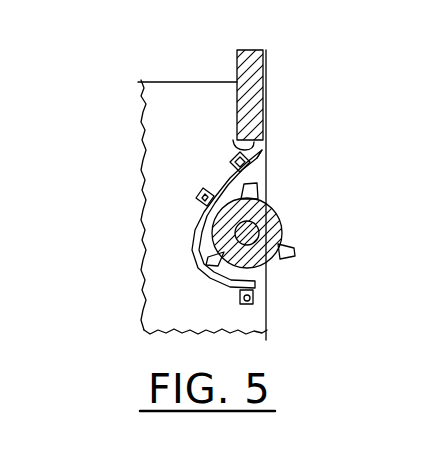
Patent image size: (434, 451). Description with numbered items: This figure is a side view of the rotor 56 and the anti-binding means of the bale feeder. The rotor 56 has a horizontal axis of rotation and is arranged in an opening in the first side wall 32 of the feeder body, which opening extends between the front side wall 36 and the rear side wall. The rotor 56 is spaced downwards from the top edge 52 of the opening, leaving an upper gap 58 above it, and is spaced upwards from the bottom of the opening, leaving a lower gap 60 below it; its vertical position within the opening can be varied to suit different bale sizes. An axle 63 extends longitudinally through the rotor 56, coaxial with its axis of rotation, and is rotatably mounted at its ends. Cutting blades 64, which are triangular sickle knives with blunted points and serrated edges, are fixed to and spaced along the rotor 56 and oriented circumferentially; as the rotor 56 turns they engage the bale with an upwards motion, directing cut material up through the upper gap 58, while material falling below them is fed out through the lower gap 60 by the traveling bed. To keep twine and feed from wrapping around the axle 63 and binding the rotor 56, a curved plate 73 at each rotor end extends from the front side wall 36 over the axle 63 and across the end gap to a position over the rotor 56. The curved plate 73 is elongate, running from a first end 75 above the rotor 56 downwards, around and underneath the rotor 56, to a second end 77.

The first side wall 32 is at (265, 70).
The front side wall 36 is at (165, 124).
The top edge 52 is at (233, 146).
The rotor 56 is at (278, 235).
The upper gap 58 is at (272, 170).
The lower gap 60 is at (299, 341).
The axle 63 is at (257, 226).
The cutting blades 64 is at (238, 170).
The curved plate 73 is at (195, 228).
The first end 75 is at (264, 154).
The second end 77 is at (256, 290).